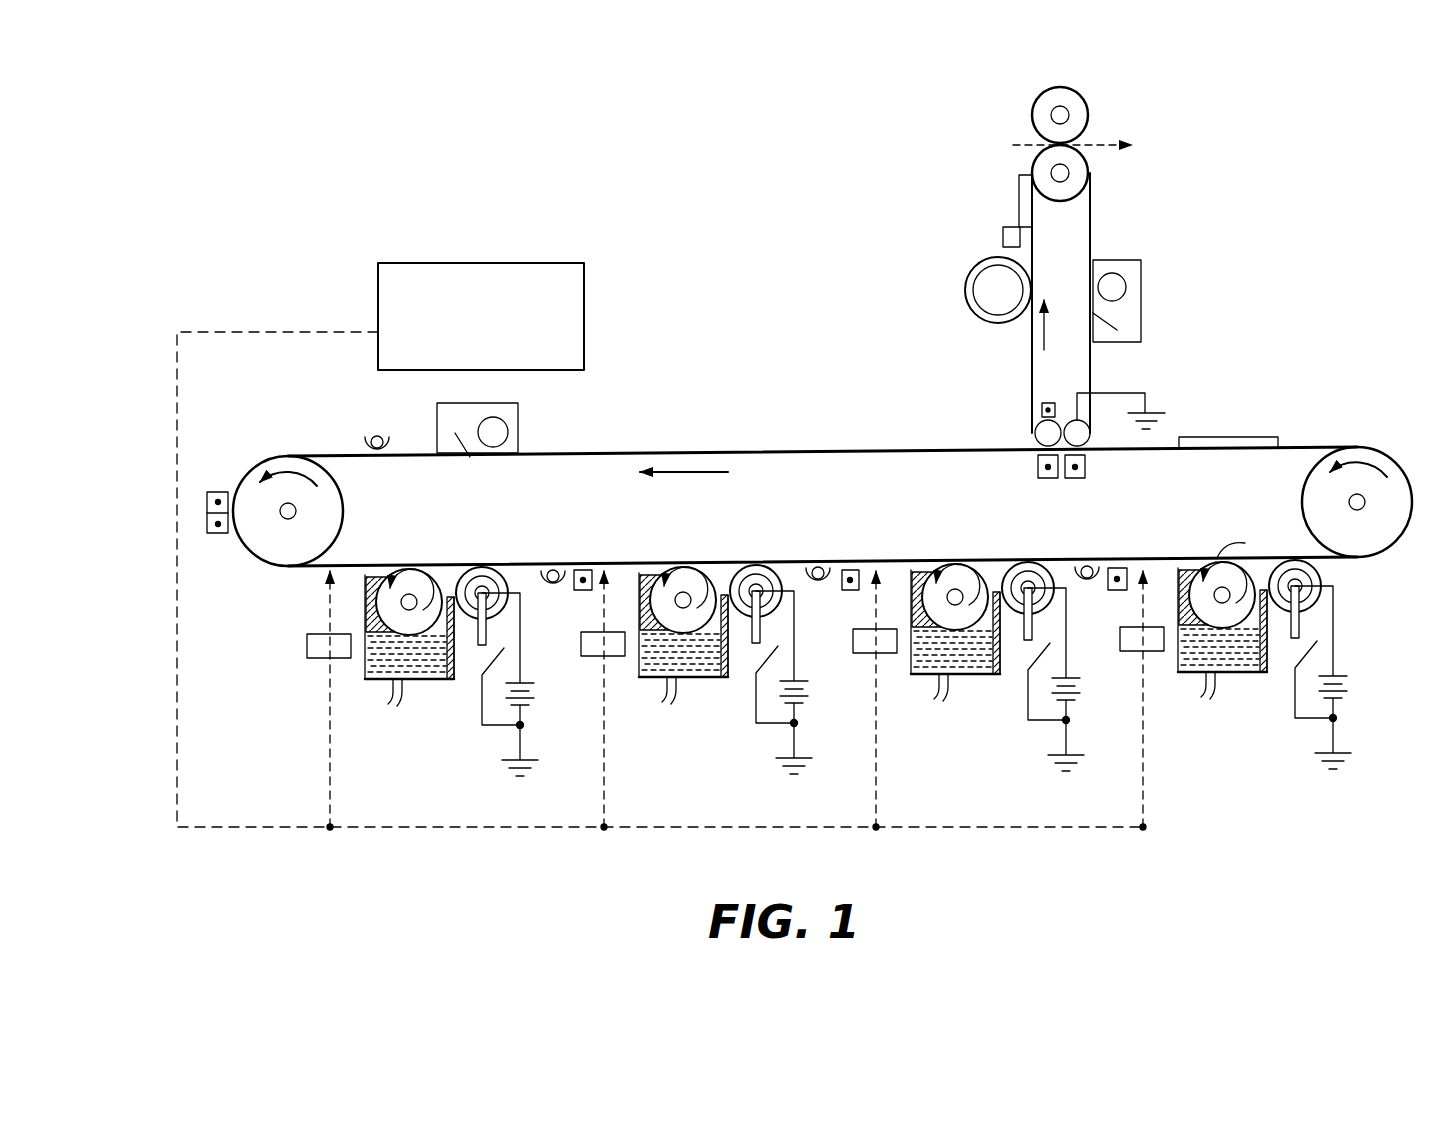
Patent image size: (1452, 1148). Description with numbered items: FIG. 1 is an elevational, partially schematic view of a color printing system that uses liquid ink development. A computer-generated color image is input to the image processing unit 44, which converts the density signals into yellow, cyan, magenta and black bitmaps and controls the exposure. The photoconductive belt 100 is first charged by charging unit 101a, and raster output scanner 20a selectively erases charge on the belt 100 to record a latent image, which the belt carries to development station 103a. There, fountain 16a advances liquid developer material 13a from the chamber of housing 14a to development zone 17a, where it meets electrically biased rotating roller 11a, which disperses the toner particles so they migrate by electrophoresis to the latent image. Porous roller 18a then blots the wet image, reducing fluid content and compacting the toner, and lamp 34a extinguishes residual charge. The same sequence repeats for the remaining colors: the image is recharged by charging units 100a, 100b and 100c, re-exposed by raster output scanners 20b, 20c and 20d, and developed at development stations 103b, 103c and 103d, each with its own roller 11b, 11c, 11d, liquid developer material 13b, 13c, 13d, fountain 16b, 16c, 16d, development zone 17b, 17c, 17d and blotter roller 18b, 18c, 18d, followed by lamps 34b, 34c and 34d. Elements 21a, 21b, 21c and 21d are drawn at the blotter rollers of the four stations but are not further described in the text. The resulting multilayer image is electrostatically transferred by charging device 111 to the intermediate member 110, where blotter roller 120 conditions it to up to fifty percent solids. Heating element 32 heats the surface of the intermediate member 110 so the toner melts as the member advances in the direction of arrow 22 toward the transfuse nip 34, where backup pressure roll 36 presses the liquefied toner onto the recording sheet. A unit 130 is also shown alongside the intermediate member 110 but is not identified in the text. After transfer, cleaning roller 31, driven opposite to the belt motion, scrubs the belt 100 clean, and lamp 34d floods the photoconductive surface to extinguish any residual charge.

The belt 100 is at (328, 453).
The charging unit 101a is at (190, 494).
The development station 103a is at (438, 674).
The development station 103b is at (743, 670).
The development station 103c is at (1002, 679).
The development station 103d is at (1270, 673).
The roller 11a is at (393, 580).
The roller 11b is at (627, 547).
The roller 11c is at (899, 554).
The roller 11d is at (1169, 551).
The liquid developer material 13a is at (450, 679).
The liquid developer material 13b is at (688, 653).
The liquid developer material 13c is at (958, 652).
The liquid developer material 13d is at (1227, 647).
The housing 14a is at (357, 688).
The fountain 16a is at (363, 610).
The fountain 16b is at (613, 675).
The fountain 16c is at (876, 669).
The fountain 16d is at (1144, 668).
The development zone 17a is at (398, 639).
The development zone 17b is at (661, 634).
The development zone 17c is at (931, 642).
The development zone 17d is at (1201, 639).
The porous roller 18a is at (510, 565).
The roller 18b is at (770, 580).
The roller 18c is at (1038, 578).
The roller 18d is at (1332, 599).
The raster output scanner 20a is at (311, 664).
The raster output scanner 20b is at (621, 685).
The raster output scanner 20c is at (894, 680).
The raster output scanner 20d is at (1158, 684).
The bias voltage supply of first station 21a is at (480, 567).
The bias voltage supply of second station 21b is at (761, 632).
The bias voltage supply of third station 21c is at (1036, 632).
The bias voltage supply of fourth station 21d is at (1298, 630).
The arrow 22 is at (1038, 335).
The cleaning roller 31 is at (520, 440).
The heating element 32 is at (1003, 232).
The transfuse nip 34 is at (1036, 143).
The lamp 34a is at (553, 560).
The lamp 34b is at (817, 560).
The lamp 34c is at (1087, 560).
The lamp 34d is at (373, 427).
The backup pressure roll 36 is at (1043, 110).
The image processing unit 44 is at (582, 262).
The charging unit 100a is at (582, 590).
The charging unit 100b is at (845, 592).
The charging unit 100c is at (1117, 590).
The intermediate member 110 is at (1092, 238).
The charging device 111 is at (1030, 470).
The blotter roller 120 is at (950, 292).
The belt cleaner 130 is at (1143, 297).